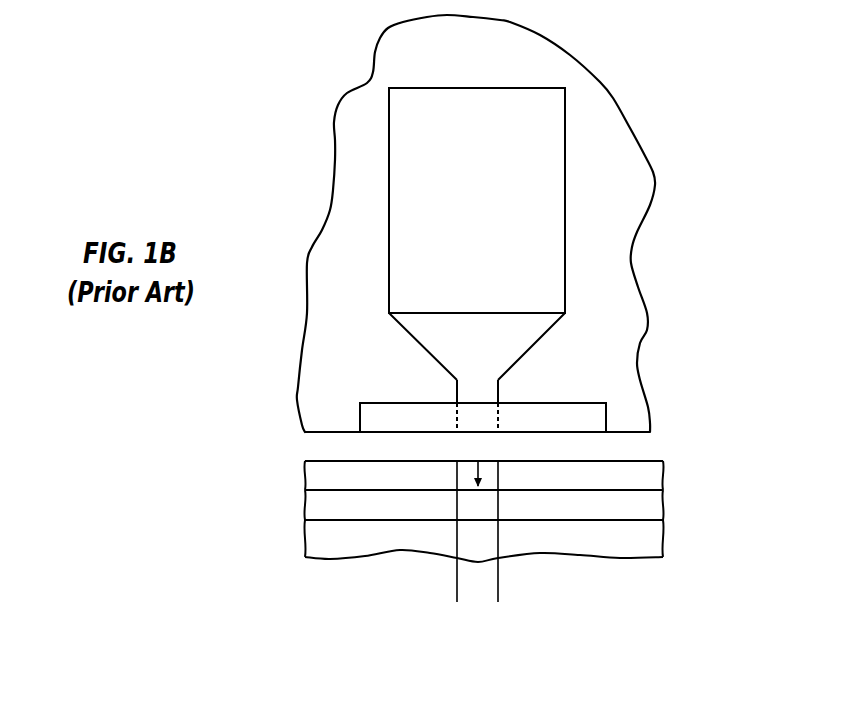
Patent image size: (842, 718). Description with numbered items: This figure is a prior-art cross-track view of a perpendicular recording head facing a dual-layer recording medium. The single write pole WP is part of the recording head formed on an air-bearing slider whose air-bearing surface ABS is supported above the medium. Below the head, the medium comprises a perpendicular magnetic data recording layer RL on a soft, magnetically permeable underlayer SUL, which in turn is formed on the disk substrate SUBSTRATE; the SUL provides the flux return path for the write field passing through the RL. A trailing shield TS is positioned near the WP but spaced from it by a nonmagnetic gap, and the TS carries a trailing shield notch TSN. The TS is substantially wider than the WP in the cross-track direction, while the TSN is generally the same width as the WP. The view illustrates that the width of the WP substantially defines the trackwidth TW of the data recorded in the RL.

The write pole WP is at (497, 217).
The trailing shield TS is at (392, 418).
The trailing shield notch TSN is at (487, 417).
The air-bearing surface ABS is at (628, 432).
The recording layer RL is at (483, 477).
The soft underlayer SUL is at (483, 507).
The disk substrate SUBSTRATE is at (483, 541).
The trackwidth TW is at (428, 590).